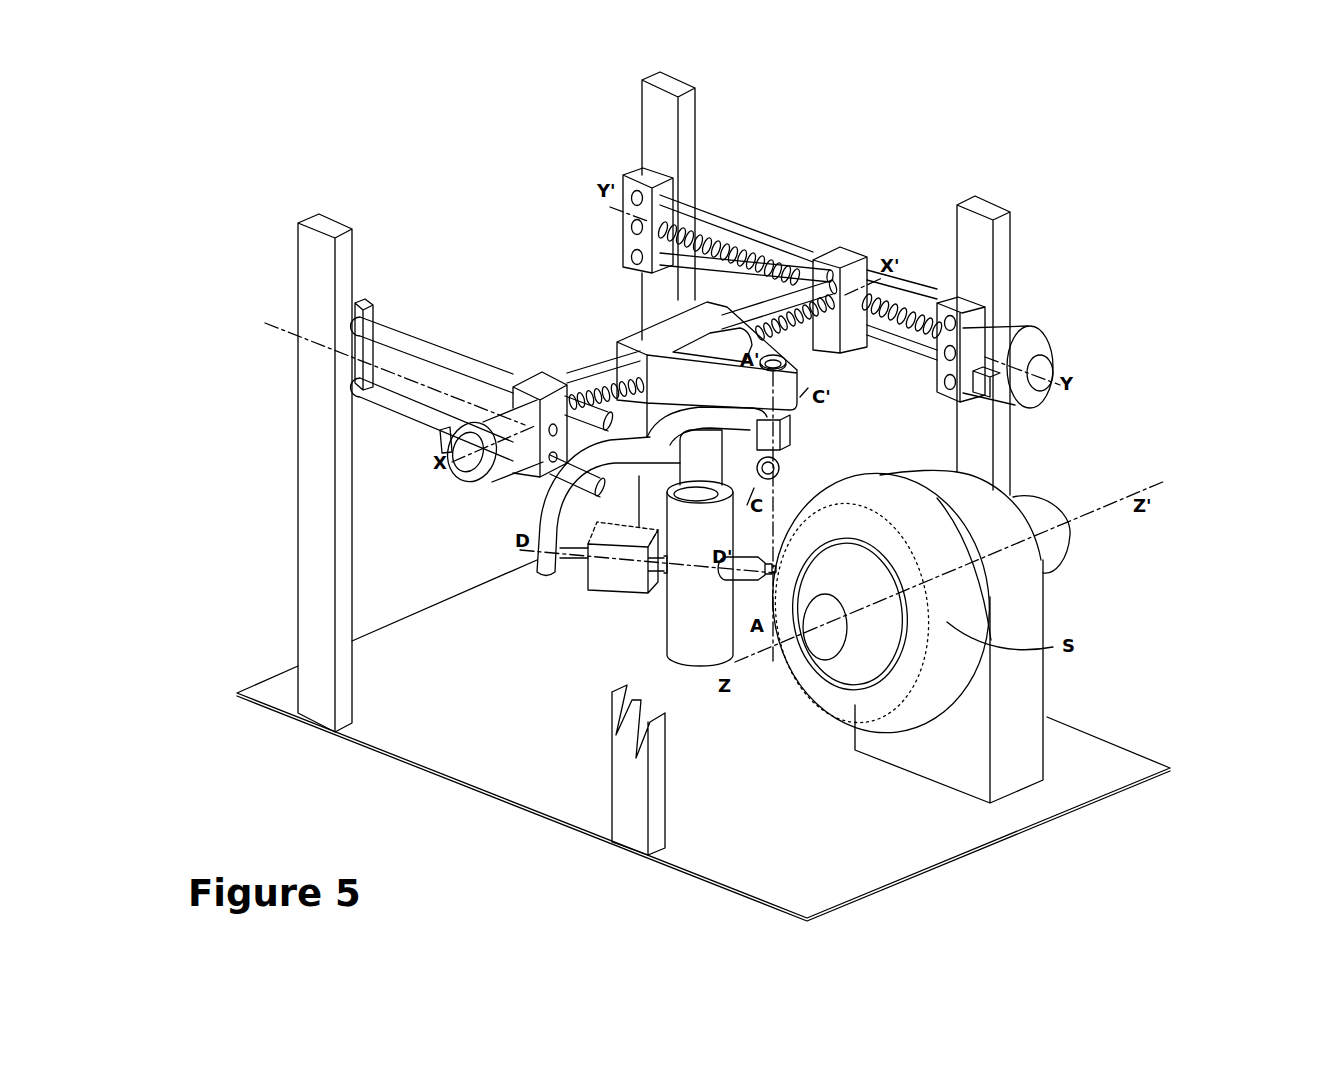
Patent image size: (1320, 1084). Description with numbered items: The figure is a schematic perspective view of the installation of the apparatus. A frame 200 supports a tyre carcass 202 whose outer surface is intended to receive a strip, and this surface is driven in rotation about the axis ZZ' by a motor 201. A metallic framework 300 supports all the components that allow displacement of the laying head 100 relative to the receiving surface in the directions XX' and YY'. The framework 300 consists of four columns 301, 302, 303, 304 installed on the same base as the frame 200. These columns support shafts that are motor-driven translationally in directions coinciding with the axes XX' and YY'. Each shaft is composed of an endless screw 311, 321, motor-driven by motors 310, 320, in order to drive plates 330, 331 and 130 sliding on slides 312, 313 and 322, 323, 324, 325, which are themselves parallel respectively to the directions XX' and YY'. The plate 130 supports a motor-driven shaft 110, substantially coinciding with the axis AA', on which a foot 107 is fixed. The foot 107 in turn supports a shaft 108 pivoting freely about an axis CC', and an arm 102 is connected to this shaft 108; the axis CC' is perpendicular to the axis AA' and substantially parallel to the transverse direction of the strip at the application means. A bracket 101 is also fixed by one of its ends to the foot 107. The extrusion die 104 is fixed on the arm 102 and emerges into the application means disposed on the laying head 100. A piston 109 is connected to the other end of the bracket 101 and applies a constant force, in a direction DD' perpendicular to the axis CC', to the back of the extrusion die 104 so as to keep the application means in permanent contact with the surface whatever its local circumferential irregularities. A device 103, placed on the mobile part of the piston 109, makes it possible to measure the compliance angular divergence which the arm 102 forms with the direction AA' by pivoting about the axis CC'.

The framework 300 is at (427, 213).
The column 301 is at (663, 130).
The column 302 is at (973, 242).
The column 303 is at (623, 765).
The column 304 is at (308, 606).
The motor 310 is at (470, 483).
The endless screw 311 is at (573, 380).
The slide 312 is at (571, 393).
The slide 313 is at (580, 433).
The motor 320 is at (1007, 343).
The endless screw 321 is at (690, 228).
The slide 322 is at (907, 293).
The slide 323 is at (727, 283).
The slide 324 is at (380, 337).
The slide 325 is at (386, 402).
The plate 330 is at (843, 255).
The plate 331 is at (540, 475).
The plate 130 is at (652, 338).
The motor-driven shaft 110 is at (800, 372).
The foot 107 is at (770, 433).
The shaft 108 is at (773, 472).
The arm 102 is at (700, 457).
The laying head 100 is at (690, 660).
The extrusion die 104 is at (680, 598).
The bracket 101 is at (545, 566).
The device 103 is at (657, 593).
The piston 109 is at (587, 593).
The frame 200 is at (1135, 612).
The motor 201 is at (1053, 540).
The tyre carcass 202 is at (842, 717).